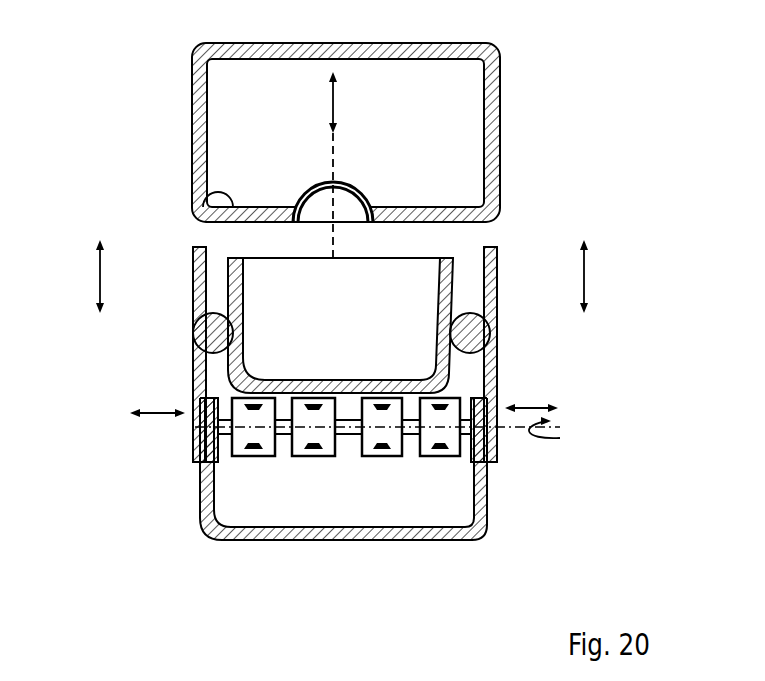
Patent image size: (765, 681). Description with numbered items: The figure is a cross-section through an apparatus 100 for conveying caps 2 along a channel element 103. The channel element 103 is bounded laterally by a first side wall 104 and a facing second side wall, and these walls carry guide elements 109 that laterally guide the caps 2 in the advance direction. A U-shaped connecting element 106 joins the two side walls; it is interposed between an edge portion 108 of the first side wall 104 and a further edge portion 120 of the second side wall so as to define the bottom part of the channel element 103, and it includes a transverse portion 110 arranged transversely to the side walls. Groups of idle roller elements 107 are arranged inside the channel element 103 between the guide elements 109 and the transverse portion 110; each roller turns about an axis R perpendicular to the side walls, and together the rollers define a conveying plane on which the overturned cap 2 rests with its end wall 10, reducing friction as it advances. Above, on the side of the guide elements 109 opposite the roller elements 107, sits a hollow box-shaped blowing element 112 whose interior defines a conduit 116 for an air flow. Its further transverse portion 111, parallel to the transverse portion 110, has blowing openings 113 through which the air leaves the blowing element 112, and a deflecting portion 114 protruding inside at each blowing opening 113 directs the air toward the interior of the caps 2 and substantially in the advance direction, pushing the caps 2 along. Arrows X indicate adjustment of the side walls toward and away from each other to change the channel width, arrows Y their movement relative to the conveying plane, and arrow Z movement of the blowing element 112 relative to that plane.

The cap 2 is at (228, 283).
The end wall 10 is at (353, 380).
The apparatus 100 is at (620, 272).
The channel element 103 is at (522, 372).
The first side wall 104 is at (192, 375).
The connecting element 106 is at (480, 492).
The roller elements 107 is at (237, 457).
The edge portion 108 is at (170, 450).
The guide elements 109 is at (192, 342).
The transverse portion 110 is at (263, 537).
The further transverse portion 111 is at (190, 203).
The blowing element 112 is at (500, 133).
The blowing opening 113 is at (350, 203).
The deflecting portion 114 is at (310, 193).
The conduit 116 is at (412, 98).
The further edge portion 120 is at (510, 453).